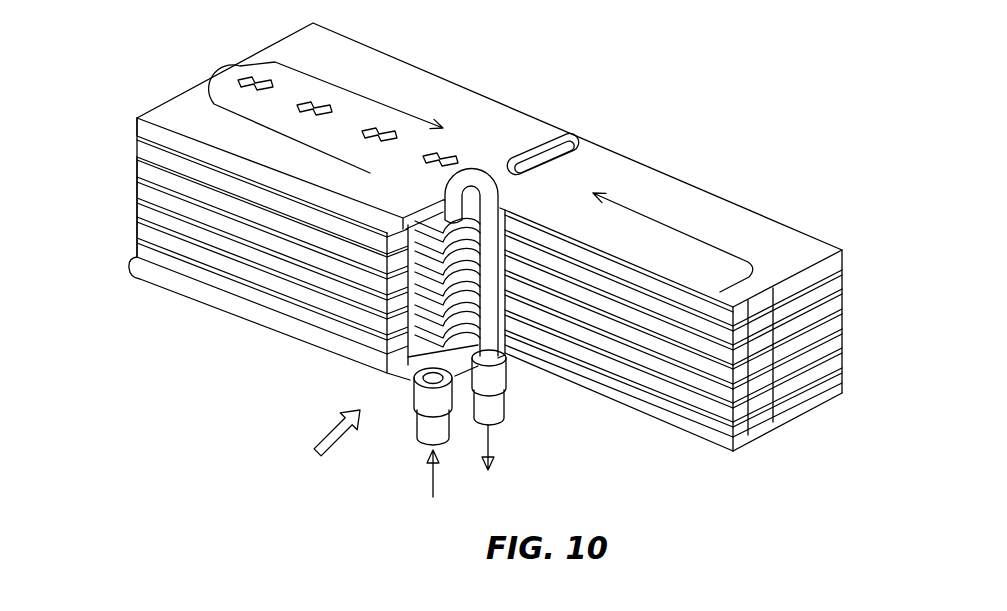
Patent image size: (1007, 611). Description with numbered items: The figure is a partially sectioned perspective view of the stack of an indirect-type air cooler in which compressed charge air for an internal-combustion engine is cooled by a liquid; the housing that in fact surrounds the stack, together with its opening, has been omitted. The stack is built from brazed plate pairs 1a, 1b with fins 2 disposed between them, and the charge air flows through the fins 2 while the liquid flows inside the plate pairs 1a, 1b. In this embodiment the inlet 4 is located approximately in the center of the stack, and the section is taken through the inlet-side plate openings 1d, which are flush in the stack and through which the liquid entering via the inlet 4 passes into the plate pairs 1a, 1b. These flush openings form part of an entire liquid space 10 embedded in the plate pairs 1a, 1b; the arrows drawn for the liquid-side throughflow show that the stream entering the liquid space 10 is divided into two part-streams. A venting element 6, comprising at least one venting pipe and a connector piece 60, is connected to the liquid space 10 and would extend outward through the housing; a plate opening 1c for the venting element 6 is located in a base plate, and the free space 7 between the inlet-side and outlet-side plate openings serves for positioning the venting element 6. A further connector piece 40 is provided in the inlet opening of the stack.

The plate pair 1a is at (163, 170).
The plate pair 1b is at (165, 172).
The plate opening 1c is at (503, 200).
The inlet-side plate opening 1d is at (405, 290).
The fins 2 is at (244, 273).
The inlet 4 is at (395, 378).
The venting element 6 is at (503, 258).
The free space 7 is at (500, 207).
The liquid space 10 is at (460, 343).
The connector piece 40 is at (418, 397).
The connector piece 60 is at (492, 402).